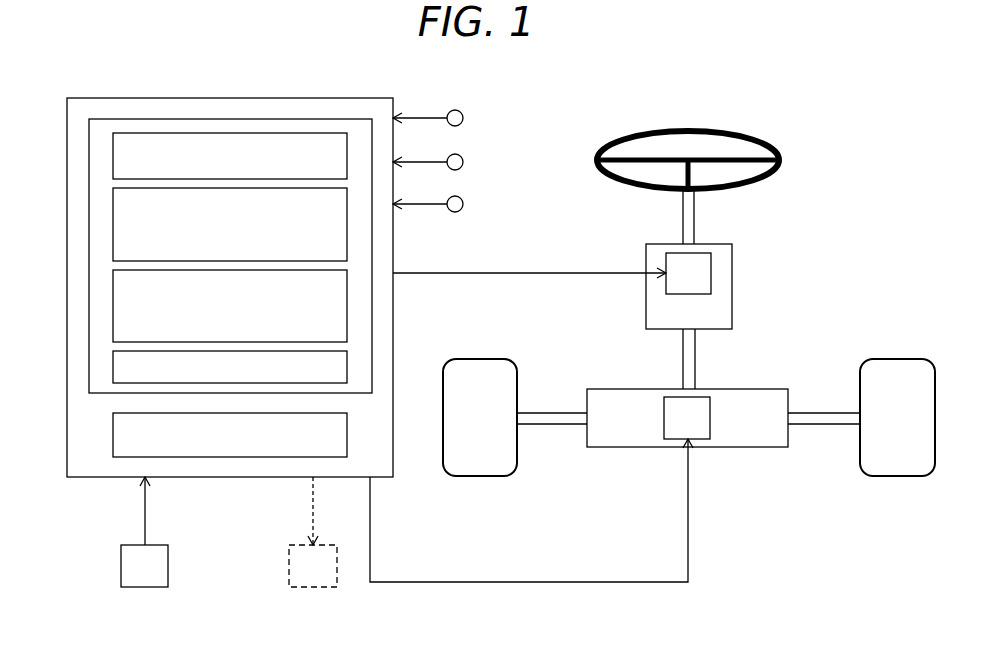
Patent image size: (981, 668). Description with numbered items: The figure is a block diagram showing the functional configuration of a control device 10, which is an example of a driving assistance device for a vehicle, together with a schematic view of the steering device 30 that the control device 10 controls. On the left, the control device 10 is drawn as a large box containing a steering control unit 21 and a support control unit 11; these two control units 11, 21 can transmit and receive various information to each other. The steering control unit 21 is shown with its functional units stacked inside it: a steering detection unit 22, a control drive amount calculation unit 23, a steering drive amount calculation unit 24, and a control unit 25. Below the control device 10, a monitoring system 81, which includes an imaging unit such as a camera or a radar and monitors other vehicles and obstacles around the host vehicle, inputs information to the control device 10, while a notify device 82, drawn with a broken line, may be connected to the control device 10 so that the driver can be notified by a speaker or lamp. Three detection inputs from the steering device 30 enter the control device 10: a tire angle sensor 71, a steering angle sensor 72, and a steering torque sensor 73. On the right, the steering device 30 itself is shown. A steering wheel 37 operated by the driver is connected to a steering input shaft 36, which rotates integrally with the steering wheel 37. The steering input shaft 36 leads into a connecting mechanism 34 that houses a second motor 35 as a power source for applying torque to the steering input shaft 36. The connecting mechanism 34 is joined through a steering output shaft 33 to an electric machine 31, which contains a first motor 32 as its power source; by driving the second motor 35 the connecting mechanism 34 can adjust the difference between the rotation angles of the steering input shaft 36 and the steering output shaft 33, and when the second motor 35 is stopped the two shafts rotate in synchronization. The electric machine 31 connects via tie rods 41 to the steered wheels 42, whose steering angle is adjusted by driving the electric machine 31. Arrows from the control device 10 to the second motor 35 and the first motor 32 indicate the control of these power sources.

The control device 10 is at (322, 98).
The steering control unit 21 is at (133, 118).
The steering detection unit 22 is at (113, 156).
The control drive amount calculation unit 23 is at (113, 222).
The steering drive amount calculation unit 24 is at (113, 313).
The control unit 25 is at (113, 358).
The support control unit 11 is at (113, 432).
The monitoring system 81 is at (143, 590).
The notify device 82 is at (313, 590).
The tire angle sensor 71 is at (464, 118).
The steering angle sensor 72 is at (464, 162).
The steering torque sensor 73 is at (464, 204).
The steering device 30 is at (652, 336).
The steering wheel 37 is at (742, 134).
The steering input shaft 36 is at (696, 214).
The connecting mechanism 34 is at (733, 312).
The second motor 35 is at (712, 272).
The steering output shaft 33 is at (681, 358).
The electric machine 31 is at (773, 389).
The first motor 32 is at (711, 415).
The tie rod 41 is at (548, 430).
The steered wheel 42 is at (481, 359).